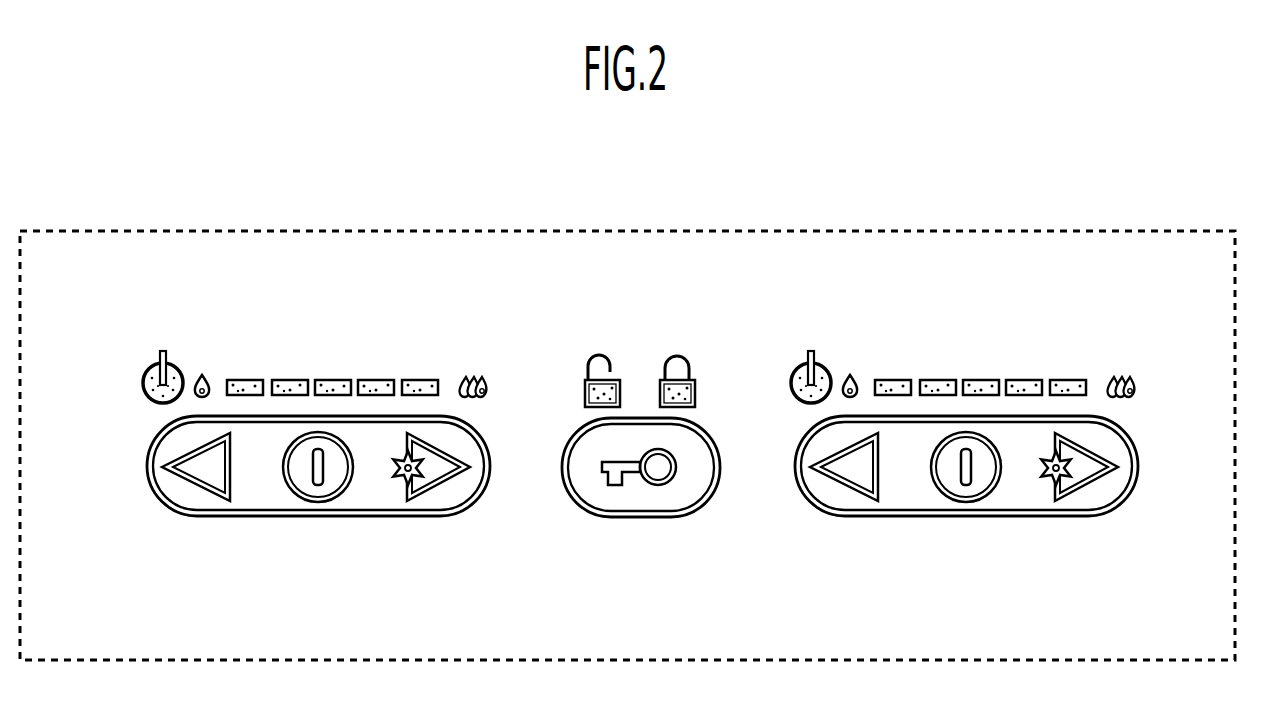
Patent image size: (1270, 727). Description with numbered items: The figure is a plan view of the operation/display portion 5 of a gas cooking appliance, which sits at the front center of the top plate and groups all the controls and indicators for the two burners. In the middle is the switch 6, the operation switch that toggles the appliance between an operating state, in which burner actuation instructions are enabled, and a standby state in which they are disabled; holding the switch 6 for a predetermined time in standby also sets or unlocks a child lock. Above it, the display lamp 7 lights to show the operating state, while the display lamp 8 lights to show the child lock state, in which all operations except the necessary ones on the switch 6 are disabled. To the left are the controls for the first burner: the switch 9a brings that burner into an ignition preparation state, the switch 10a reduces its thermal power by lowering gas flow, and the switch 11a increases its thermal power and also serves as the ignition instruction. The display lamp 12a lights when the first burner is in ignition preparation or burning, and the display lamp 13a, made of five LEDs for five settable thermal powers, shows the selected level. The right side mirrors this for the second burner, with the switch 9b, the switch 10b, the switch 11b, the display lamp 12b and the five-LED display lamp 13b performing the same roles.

The operation/display portion 5 is at (843, 230).
The switch 6 is at (655, 485).
The display lamp 7 is at (583, 383).
The display lamp 8 is at (694, 386).
The switch 9a is at (307, 488).
The switch 9b is at (953, 521).
The switch 10a is at (202, 482).
The switch 10b is at (838, 520).
The switch 11a is at (420, 493).
The switch 11b is at (1079, 519).
The display lamp 12a is at (178, 368).
The display lamp 12b is at (824, 337).
The display lamp 13a is at (222, 377).
The display lamp 13b is at (982, 342).